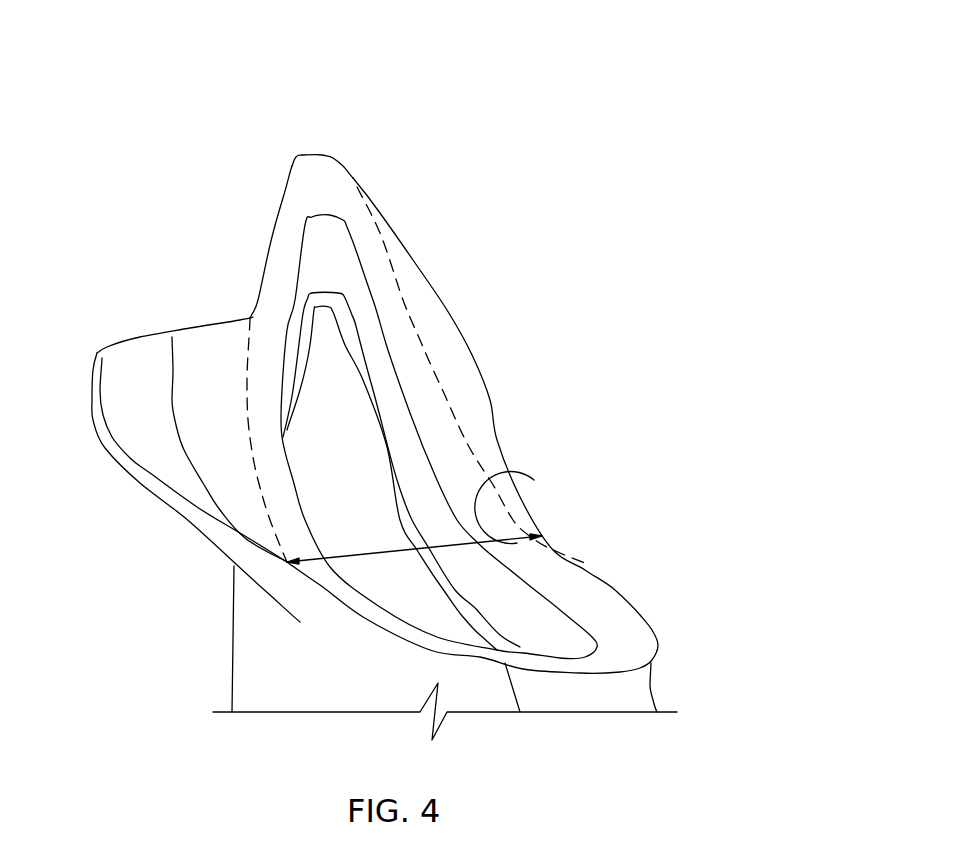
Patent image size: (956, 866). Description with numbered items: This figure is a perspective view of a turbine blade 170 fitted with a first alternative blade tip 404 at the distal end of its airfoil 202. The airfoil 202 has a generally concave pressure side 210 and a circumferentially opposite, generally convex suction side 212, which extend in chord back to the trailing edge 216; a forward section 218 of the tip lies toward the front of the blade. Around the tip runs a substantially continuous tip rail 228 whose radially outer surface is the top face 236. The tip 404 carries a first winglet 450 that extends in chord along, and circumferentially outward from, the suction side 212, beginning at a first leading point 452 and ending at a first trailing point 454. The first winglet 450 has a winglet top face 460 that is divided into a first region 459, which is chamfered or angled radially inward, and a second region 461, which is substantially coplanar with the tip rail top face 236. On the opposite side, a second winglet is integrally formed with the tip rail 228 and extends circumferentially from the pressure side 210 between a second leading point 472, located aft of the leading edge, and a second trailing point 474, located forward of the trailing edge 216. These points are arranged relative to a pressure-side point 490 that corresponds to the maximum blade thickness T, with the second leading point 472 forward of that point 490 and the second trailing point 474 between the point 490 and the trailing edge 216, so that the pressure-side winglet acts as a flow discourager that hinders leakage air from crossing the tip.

The turbine blade 170 is at (470, 73).
The airfoil 202 is at (233, 658).
The pressure side 210 is at (397, 200).
The suction side 212 is at (258, 222).
The trailing edge 216 is at (660, 647).
The forward section 218 is at (330, 152).
The tip rail 228 is at (298, 178).
The top face of tip rail 236 is at (595, 663).
The blade tip 404 is at (650, 610).
The first winglet 450 is at (135, 357).
The first leading point 452 is at (288, 562).
The first trailing point 454 is at (258, 318).
The first region 459 is at (150, 428).
The winglet top face 460 is at (187, 343).
The second region 461 is at (220, 355).
The second leading point 472 is at (613, 580).
The second trailing point 474 is at (343, 160).
The pressure-side point 490 is at (547, 532).
The maximum blade thickness T is at (514, 508).